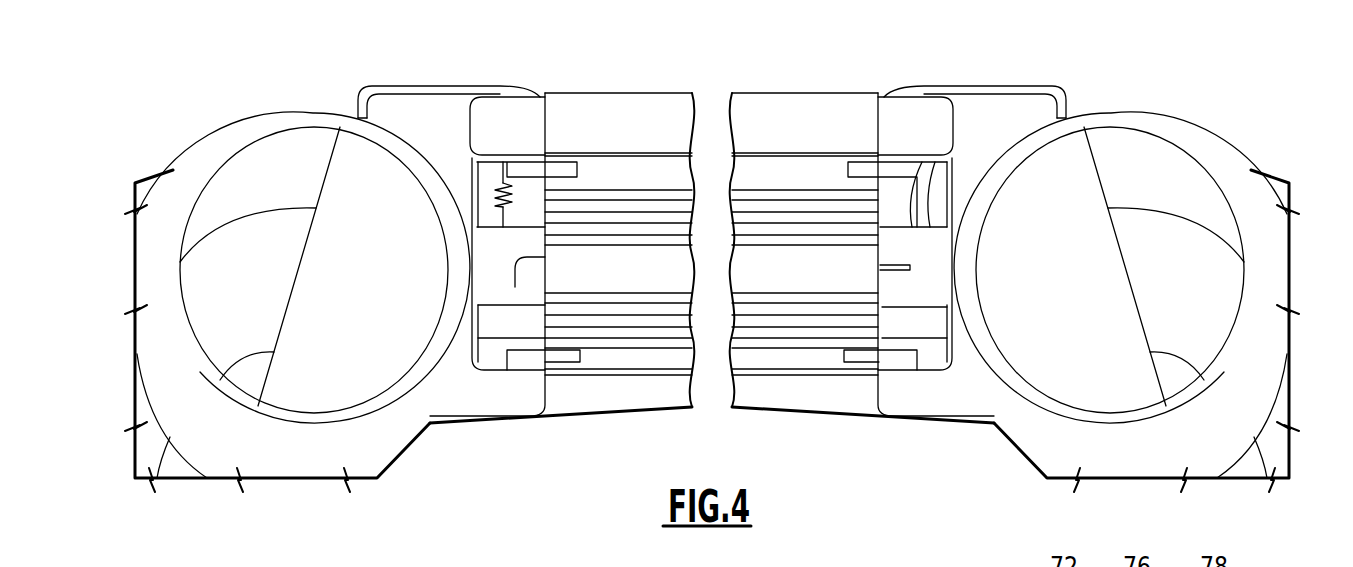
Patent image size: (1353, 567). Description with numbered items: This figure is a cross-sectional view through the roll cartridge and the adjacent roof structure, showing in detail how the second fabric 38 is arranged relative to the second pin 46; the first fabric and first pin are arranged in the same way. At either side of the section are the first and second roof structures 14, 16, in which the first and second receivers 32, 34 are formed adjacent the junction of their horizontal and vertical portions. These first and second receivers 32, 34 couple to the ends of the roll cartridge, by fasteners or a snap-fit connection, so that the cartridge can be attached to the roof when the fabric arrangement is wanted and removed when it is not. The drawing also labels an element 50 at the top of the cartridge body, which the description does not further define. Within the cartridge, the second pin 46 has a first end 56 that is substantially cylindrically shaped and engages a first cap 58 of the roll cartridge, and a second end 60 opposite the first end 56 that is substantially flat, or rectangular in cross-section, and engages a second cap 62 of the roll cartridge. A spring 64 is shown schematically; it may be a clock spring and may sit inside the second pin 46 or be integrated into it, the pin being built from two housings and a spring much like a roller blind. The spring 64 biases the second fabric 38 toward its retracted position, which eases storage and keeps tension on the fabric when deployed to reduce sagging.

The first roof structure 14 is at (262, 98).
The second roof structure 16 is at (1107, 97).
The first receiver 32 is at (370, 86).
The second receiver 34 is at (1054, 86).
The second fabric 38 is at (768, 330).
The second pin 46 is at (637, 277).
The housing 50 is at (508, 112).
The first end 56 is at (532, 273).
The first cap 58 is at (476, 278).
The second end 60 is at (905, 272).
The second cap 62 is at (918, 290).
The spring 64 is at (497, 190).